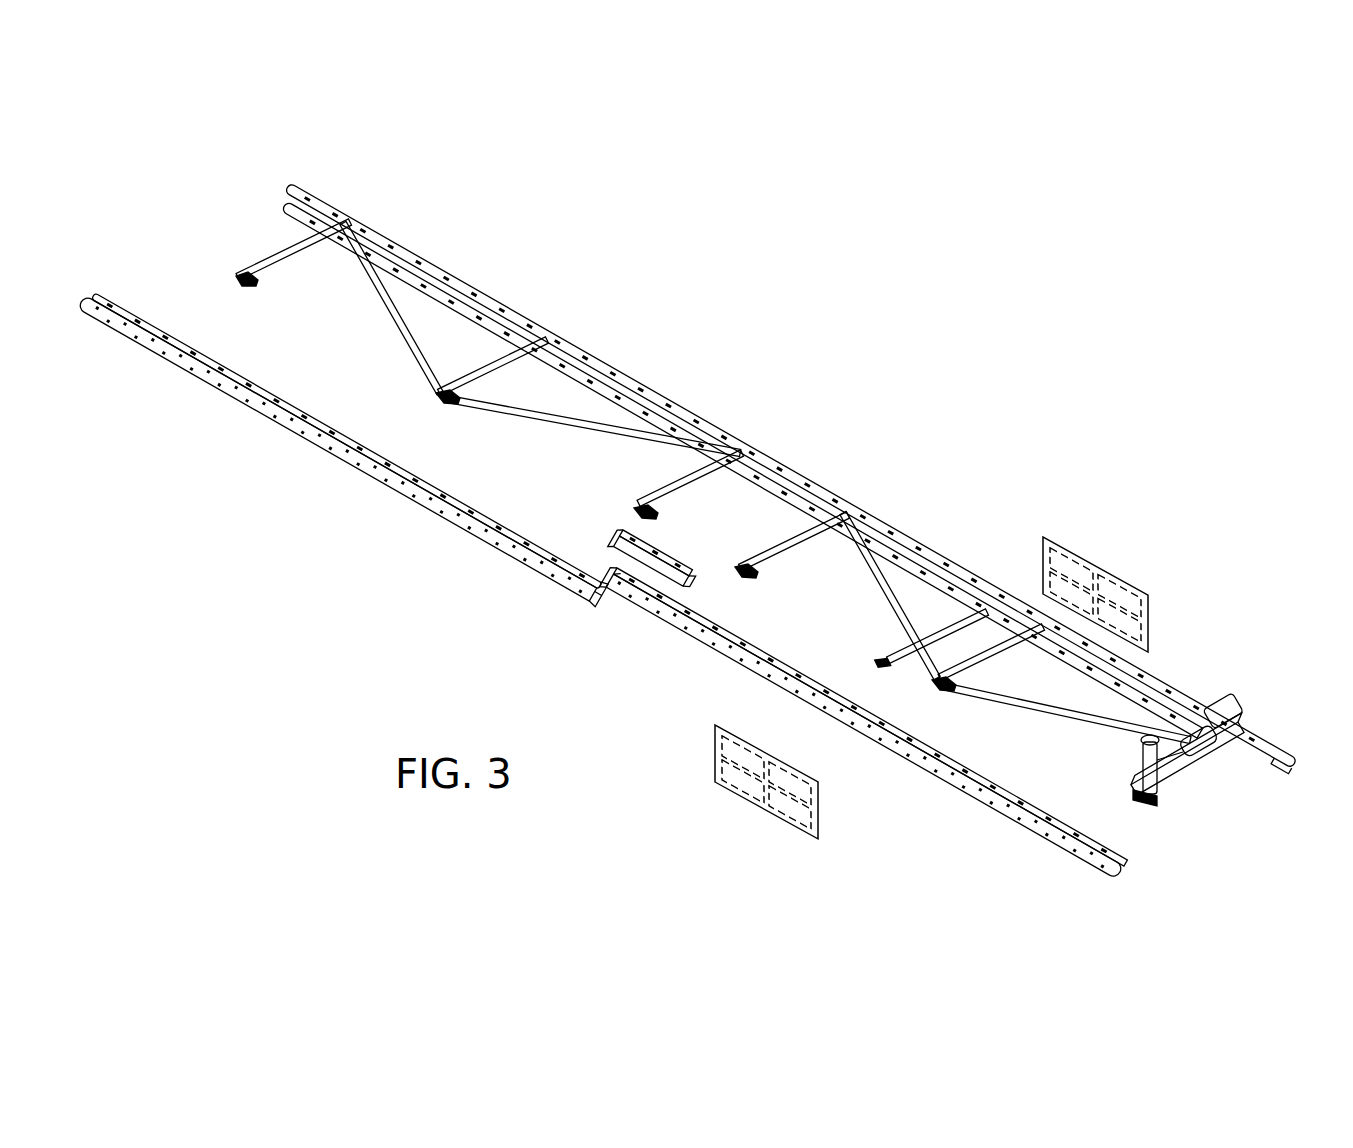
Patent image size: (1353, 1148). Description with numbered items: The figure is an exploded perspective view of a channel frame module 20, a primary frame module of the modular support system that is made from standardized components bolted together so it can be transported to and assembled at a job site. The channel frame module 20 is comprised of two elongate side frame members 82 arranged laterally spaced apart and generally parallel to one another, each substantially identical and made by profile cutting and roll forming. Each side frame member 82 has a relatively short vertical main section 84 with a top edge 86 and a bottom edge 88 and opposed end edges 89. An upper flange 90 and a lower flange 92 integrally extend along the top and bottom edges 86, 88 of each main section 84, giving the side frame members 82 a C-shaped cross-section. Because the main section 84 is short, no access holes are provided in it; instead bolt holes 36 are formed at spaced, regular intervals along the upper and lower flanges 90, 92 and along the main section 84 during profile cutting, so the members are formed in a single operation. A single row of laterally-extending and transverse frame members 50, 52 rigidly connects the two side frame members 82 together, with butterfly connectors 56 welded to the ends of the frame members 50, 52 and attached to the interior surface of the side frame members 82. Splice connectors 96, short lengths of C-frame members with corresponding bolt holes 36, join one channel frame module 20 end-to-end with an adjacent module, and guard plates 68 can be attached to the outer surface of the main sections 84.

The channel frame module 20 is at (624, 208).
The bolt holes 36 is at (532, 320).
The laterally-extending frame member 50 is at (275, 252).
The transverse frame member 52 is at (400, 340).
The butterfly connectors 56 is at (253, 285).
The guard plates 68 is at (1100, 570).
The side frame members 82 is at (615, 357).
The main section 84 is at (415, 512).
The top edge 86 is at (500, 302).
The bottom edge 88 is at (530, 582).
The end edges 89 is at (1130, 867).
The upper flange 90 is at (315, 192).
The lower flange 92 is at (607, 393).
The splice connectors 96 is at (665, 548).